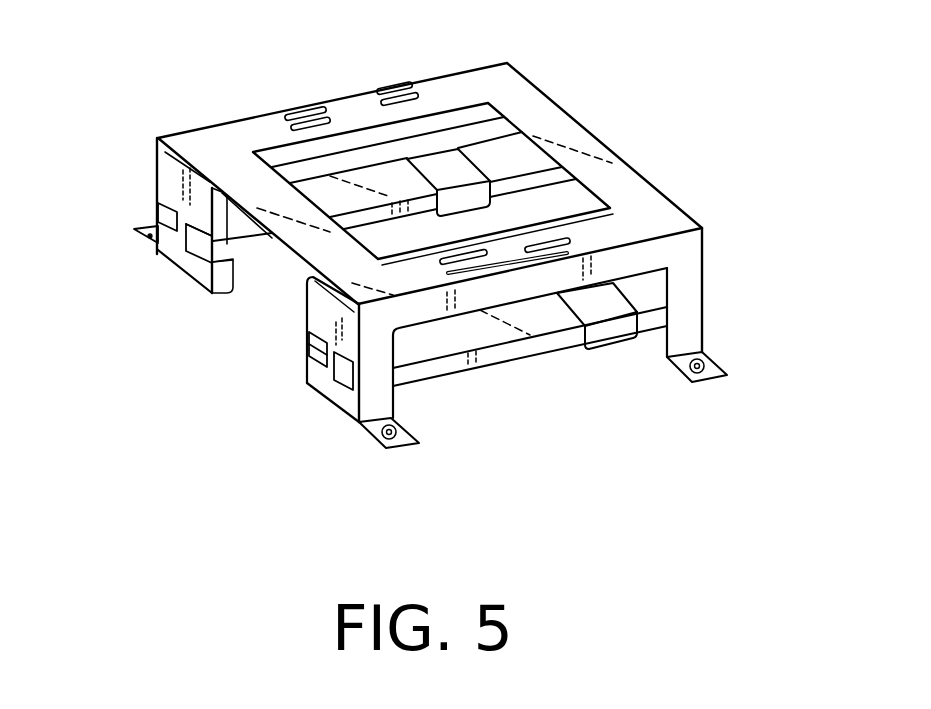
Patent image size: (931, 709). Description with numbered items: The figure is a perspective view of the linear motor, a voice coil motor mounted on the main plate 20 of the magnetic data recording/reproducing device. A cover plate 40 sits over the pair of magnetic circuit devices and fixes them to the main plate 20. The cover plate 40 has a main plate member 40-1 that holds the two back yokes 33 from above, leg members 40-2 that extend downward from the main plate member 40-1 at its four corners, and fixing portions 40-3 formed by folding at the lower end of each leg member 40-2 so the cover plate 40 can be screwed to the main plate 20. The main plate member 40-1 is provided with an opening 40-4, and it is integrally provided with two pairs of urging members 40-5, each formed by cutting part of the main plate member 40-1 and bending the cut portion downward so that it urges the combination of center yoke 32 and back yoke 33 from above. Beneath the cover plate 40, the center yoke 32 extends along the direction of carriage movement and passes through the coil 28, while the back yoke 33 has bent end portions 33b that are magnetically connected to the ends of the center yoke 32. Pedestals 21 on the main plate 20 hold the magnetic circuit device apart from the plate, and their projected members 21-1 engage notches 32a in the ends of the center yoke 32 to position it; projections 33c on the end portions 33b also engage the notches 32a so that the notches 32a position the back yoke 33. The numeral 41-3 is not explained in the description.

The main plate 20 is at (243, 404).
The pedestal 21 is at (190, 265).
The projected member 21-1 is at (188, 250).
The coil 28 is at (485, 160).
The center yoke 32 is at (264, 240).
The notch 32a is at (308, 347).
The back yoke 33 is at (362, 140).
The end portion 33b is at (172, 181).
The projection 33c is at (163, 212).
The cover plate 40 is at (618, 185).
The main plate member 40-1 is at (653, 200).
The leg member 40-2 is at (157, 152).
The fixing portion 40-3 is at (393, 447).
The opening 40-4 is at (568, 150).
The urging member 40-5 is at (300, 117).
The latch tip 41-3 is at (142, 240).